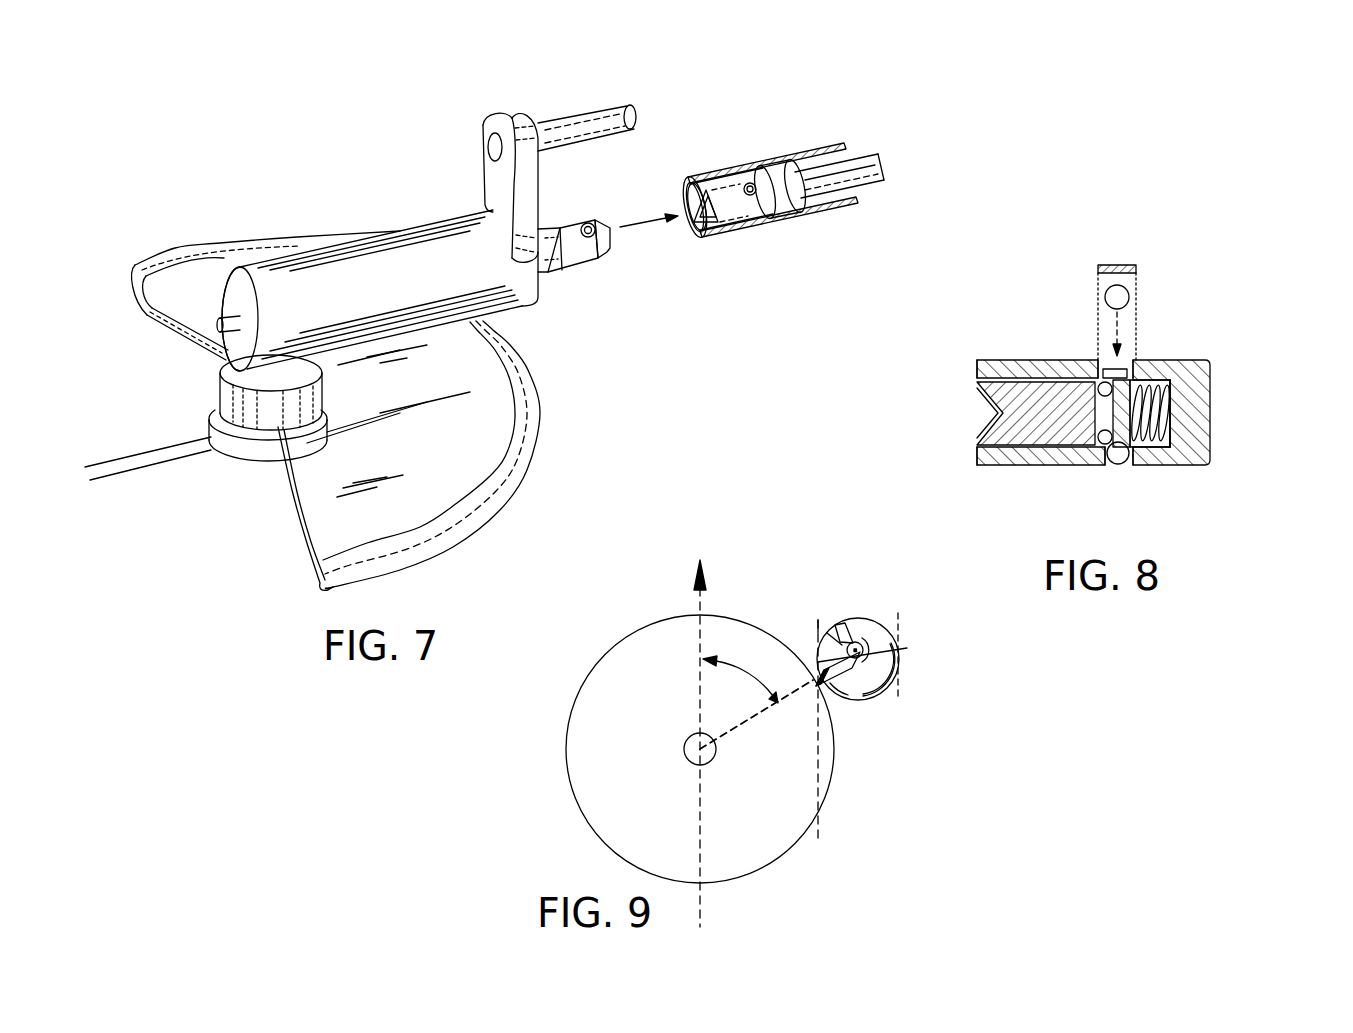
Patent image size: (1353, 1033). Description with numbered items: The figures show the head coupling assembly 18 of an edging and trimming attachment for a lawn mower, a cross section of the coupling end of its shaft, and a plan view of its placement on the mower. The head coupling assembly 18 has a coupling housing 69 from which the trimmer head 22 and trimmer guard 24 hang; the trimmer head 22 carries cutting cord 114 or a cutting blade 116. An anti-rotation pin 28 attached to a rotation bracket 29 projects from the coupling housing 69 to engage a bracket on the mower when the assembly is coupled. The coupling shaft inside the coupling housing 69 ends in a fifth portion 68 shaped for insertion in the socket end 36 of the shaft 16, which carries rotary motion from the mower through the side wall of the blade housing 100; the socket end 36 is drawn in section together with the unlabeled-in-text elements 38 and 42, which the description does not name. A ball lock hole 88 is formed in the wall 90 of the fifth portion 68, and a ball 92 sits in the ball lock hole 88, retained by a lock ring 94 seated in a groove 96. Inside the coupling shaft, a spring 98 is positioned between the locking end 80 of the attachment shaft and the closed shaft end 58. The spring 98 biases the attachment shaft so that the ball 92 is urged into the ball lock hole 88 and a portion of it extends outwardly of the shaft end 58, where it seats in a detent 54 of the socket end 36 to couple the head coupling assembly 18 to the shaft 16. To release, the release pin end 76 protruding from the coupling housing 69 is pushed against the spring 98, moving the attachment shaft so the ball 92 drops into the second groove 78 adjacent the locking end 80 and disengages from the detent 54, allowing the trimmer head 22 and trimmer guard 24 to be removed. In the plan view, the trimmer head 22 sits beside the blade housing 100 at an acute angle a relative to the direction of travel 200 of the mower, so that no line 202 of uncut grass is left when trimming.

In FIG. 7, the shaft 16 is at (837, 178).
In FIG. 7, the head coupling assembly 18 is at (356, 207).
In FIG. 8, the head coupling assembly 18 is at (1068, 303).
In FIG. 9, the head coupling assembly 18 is at (808, 628).
In FIG. 7, the trimmer head 22 is at (235, 453).
In FIG. 9, the trimmer head 22 is at (855, 642).
In FIG. 7, the trimmer guard 24 is at (523, 410).
In FIG. 9, the trimmer guard 24 is at (873, 635).
In FIG. 7, the anti-rotation pin 28 is at (557, 115).
In FIG. 7, the rotation bracket 29 is at (482, 133).
In FIG. 7, the socket end 36 is at (713, 217).
In FIG. 7, the tube 38 is at (842, 148).
In FIG. 7, the collar 42 is at (793, 175).
In FIG. 7, the detent 54 is at (752, 193).
In FIG. 7, the closed shaft end 58 is at (608, 213).
In FIG. 8, the closed shaft end 58 is at (1210, 410).
In FIG. 8, the fifth portion 68 is at (1012, 360).
In FIG. 7, the coupling housing 69 is at (243, 273).
In FIG. 7, the release pin end 76 is at (218, 323).
In FIG. 8, the second groove 78 is at (1068, 448).
In FIG. 8, the locking end 80 is at (1121, 397).
In FIG. 8, the ball lock hole 88 is at (1115, 372).
In FIG. 8, the wall 90 is at (1157, 360).
In FIG. 7, the ball 92 is at (593, 236).
In FIG. 8, the ball 92 is at (1128, 295).
In FIG. 7, the lock ring 94 is at (586, 236).
In FIG. 8, the lock ring 94 is at (1133, 265).
In FIG. 8, the groove 96 is at (1135, 365).
In FIG. 8, the spring 98 is at (1172, 422).
In FIG. 9, the blade housing 100 is at (578, 768).
In FIG. 7, the cutting cord 114 is at (158, 508).
In FIG. 9, the cutting blade 116 is at (818, 630).
In FIG. 9, the direction of travel 200 is at (697, 593).
In FIG. 9, the line of uncut grass 202 is at (820, 843).
In FIG. 9, the acute angle a is at (740, 624).